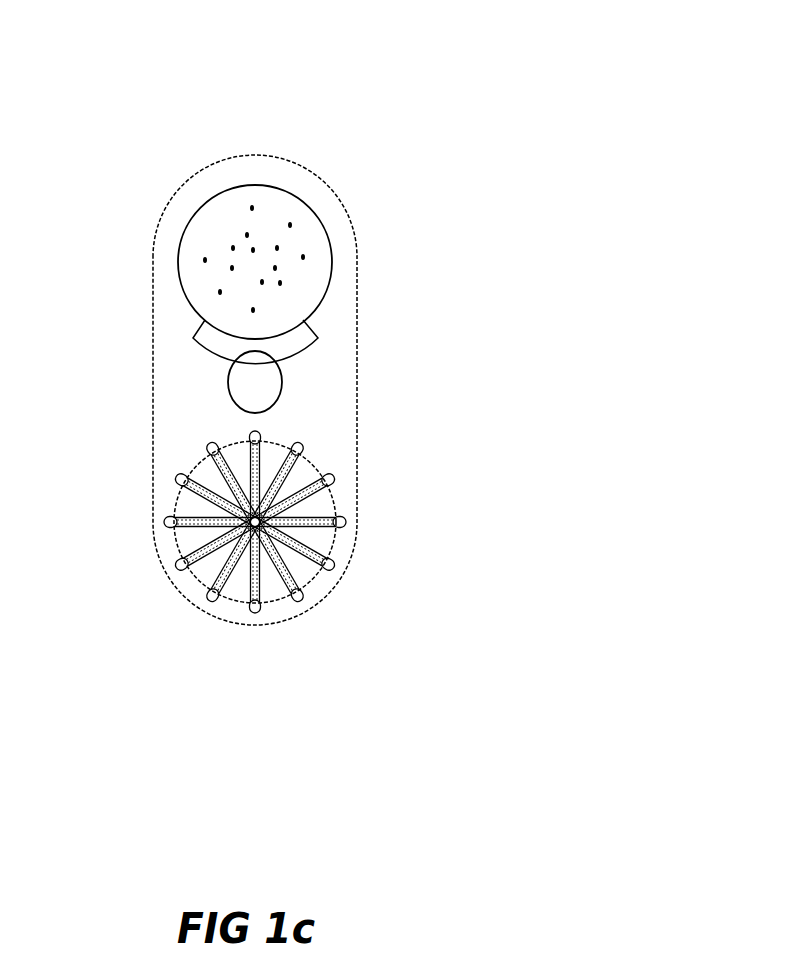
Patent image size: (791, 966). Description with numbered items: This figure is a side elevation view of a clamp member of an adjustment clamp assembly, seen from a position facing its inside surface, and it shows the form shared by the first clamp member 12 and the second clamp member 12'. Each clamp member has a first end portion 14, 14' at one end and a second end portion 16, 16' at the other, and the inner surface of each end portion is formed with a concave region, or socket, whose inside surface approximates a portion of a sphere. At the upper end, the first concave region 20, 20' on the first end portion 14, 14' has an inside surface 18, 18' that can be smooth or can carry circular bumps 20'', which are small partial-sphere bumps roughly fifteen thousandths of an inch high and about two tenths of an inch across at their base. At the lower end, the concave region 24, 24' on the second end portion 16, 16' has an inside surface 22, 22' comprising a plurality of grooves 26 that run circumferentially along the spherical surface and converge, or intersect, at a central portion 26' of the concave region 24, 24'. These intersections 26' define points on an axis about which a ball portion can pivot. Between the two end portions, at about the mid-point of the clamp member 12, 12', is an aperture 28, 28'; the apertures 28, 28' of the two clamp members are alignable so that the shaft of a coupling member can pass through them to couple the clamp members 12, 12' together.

The first clamp member 12 is at (249, 334).
The second clamp member 12' is at (249, 334).
The first end portion 14 is at (208, 390).
The first end portion 14' is at (208, 390).
The second end portion 16 is at (249, 538).
The second end portion 16' is at (249, 538).
The inside surface 18 is at (196, 271).
The inside surface 18' is at (196, 271).
The first concave region 20 is at (327, 253).
The first concave region 20' is at (327, 253).
The circular bumps 20'' is at (349, 262).
The inside surface 22 is at (282, 547).
The inside surface 22' is at (282, 547).
The concave region 24 is at (276, 518).
The concave region 24' is at (276, 518).
The grooves 26 is at (261, 522).
The central portion 26' is at (160, 581).
The aperture 28 is at (169, 370).
The aperture 28' is at (169, 370).